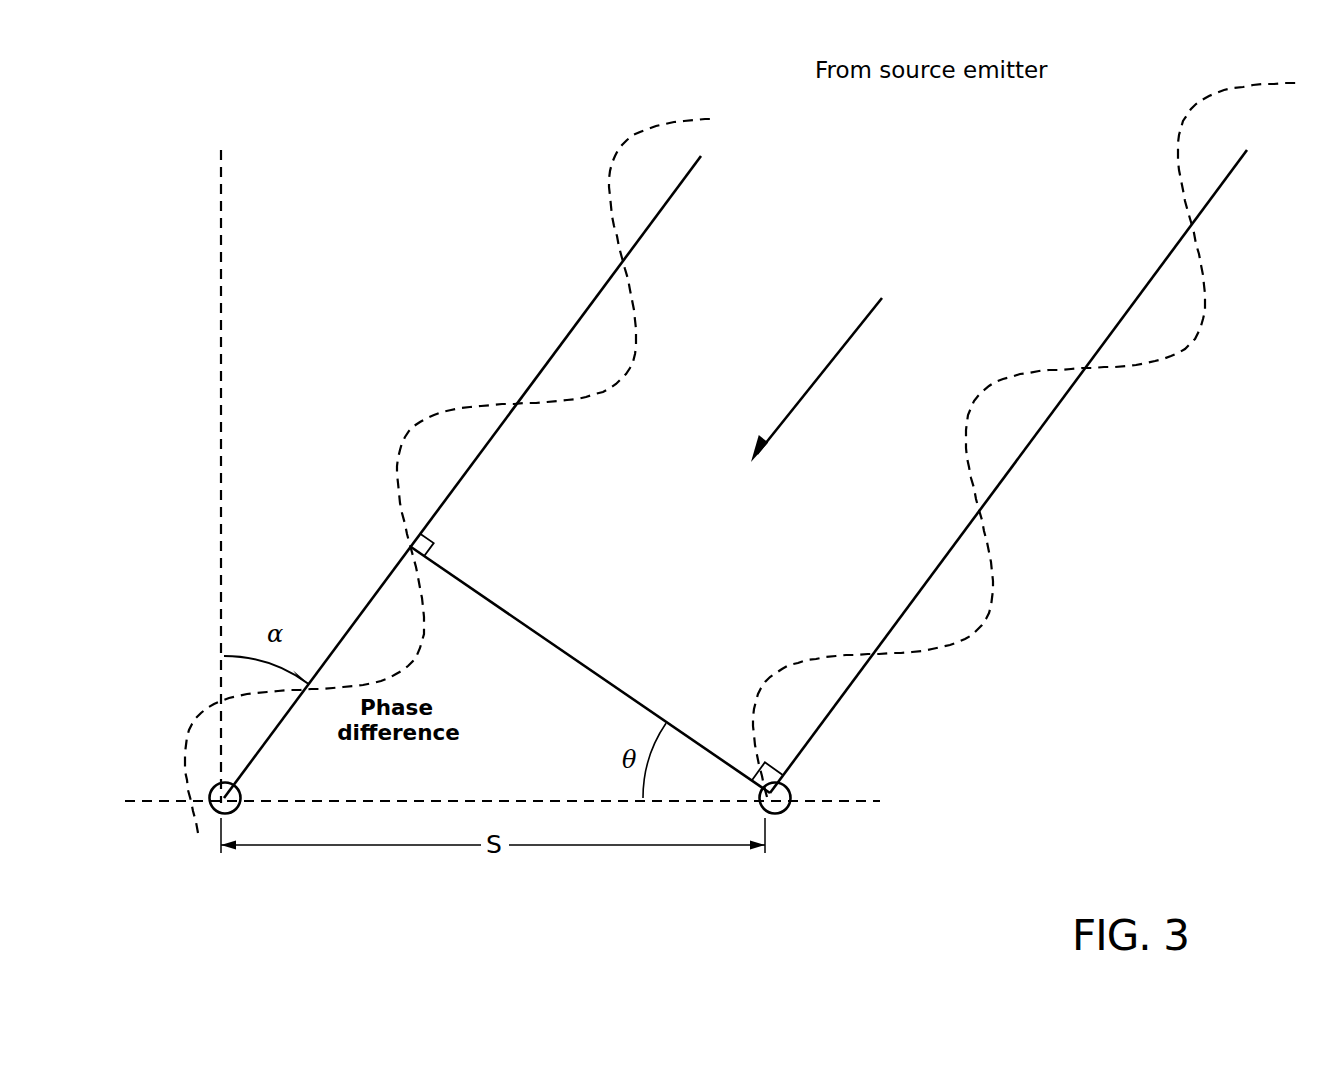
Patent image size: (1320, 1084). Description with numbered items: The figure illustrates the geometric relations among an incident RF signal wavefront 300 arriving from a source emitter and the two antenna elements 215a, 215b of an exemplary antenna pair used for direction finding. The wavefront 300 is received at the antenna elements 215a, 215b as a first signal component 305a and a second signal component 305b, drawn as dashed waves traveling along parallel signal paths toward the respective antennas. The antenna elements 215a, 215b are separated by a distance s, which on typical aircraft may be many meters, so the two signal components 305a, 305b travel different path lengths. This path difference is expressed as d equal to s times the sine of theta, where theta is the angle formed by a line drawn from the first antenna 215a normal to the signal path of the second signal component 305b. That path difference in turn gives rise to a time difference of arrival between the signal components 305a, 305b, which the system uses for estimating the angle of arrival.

The incident RF signal wavefront 300 is at (929, 253).
The first signal component 305a is at (915, 650).
The second signal component 305b is at (427, 612).
The antenna element 215a is at (775, 863).
The antenna element 215b is at (236, 863).